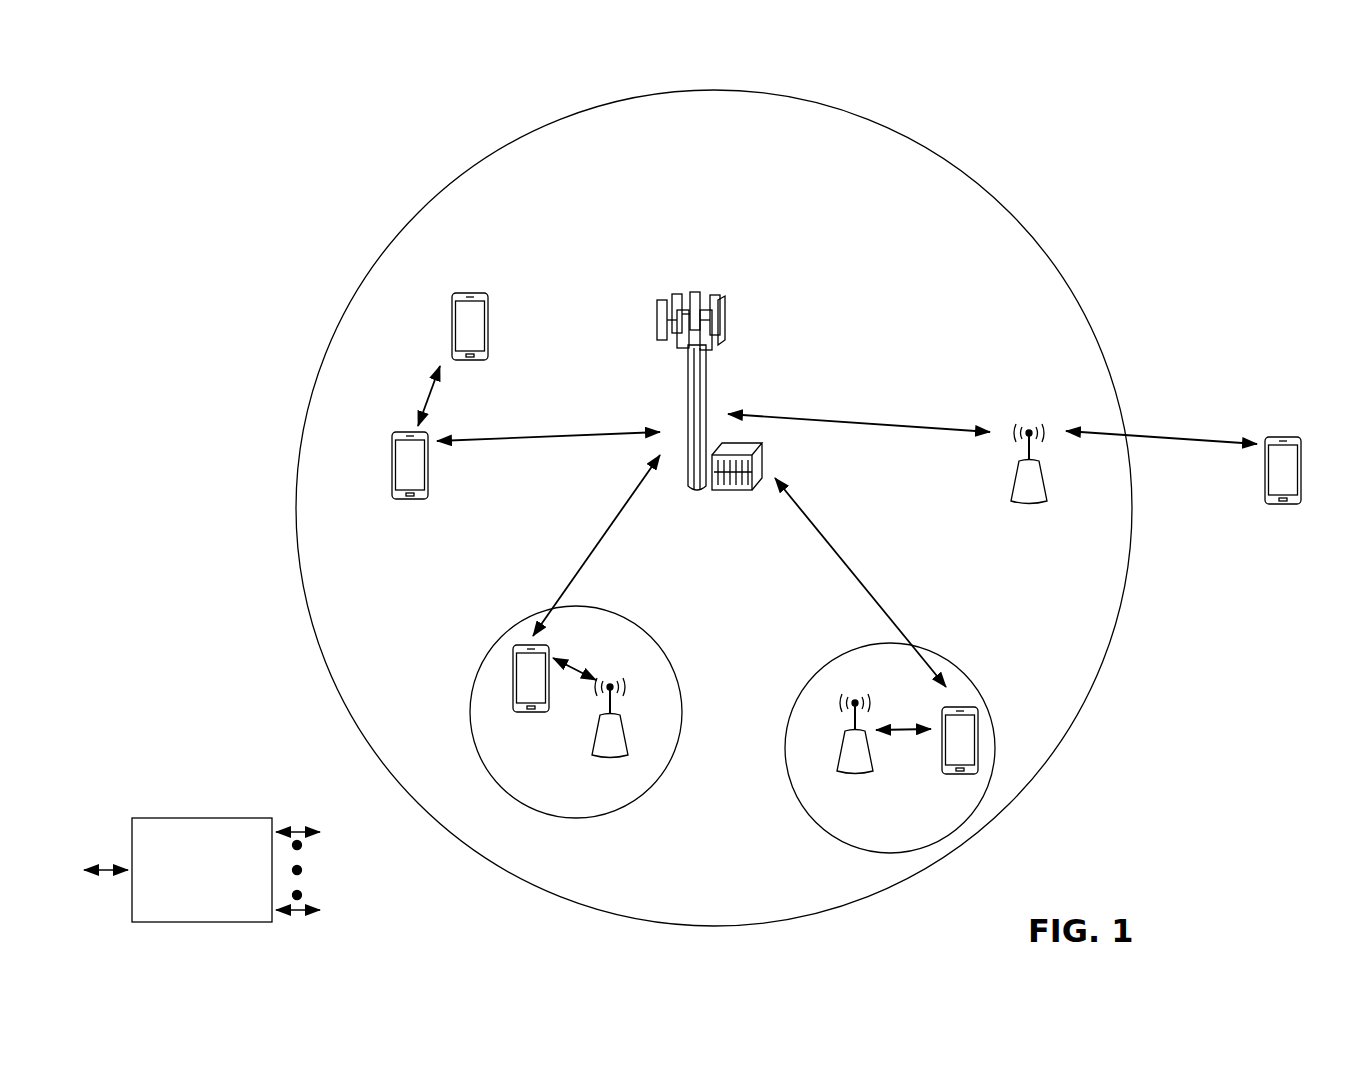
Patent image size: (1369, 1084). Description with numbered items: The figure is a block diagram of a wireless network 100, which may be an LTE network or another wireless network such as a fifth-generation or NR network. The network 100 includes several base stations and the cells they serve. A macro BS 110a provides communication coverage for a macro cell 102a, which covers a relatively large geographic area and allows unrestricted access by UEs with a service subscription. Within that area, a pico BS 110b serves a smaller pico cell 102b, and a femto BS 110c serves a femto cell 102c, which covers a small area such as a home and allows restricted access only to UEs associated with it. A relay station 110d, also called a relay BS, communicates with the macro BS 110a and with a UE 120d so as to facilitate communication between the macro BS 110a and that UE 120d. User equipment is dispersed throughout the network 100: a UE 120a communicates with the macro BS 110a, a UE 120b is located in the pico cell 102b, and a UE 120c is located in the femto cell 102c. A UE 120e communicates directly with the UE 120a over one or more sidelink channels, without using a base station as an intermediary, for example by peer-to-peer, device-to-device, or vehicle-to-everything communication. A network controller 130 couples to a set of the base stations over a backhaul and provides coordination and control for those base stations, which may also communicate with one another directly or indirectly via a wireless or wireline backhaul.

The wireless network 100 is at (180, 74).
The macro cell 102a is at (990, 191).
The pico cell 102b is at (662, 654).
The femto cell 102c is at (824, 662).
The macro BS 110a is at (700, 290).
The pico BS 110b is at (632, 743).
The femto BS 110c is at (838, 758).
The relay station 110d is at (1030, 424).
The UE 120a is at (391, 466).
The UE 120b is at (520, 714).
The UE 120c is at (945, 774).
The UE 120d is at (1289, 436).
The UE 120e is at (455, 308).
The network controller 130 is at (200, 817).